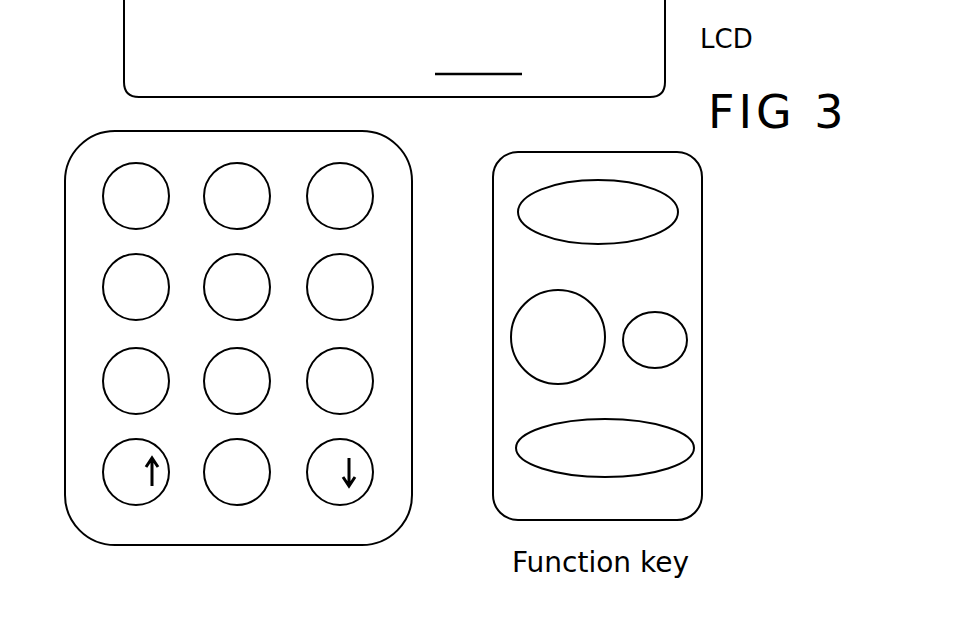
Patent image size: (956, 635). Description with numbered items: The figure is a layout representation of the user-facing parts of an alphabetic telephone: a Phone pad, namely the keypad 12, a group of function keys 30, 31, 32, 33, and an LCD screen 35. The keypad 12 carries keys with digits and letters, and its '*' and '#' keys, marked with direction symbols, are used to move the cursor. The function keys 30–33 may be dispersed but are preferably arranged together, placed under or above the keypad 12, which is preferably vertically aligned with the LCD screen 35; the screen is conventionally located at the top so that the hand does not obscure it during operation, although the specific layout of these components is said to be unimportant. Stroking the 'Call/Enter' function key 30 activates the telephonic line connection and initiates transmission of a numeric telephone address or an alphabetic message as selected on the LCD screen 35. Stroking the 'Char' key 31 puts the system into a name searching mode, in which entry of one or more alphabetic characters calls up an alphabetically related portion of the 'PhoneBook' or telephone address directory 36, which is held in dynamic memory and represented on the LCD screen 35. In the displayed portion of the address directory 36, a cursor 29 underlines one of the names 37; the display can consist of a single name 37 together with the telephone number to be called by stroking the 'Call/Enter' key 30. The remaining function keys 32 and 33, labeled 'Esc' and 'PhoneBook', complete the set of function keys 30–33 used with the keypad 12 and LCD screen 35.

The keypad 12 is at (350, 545).
The cursor 29 is at (496, 76).
The 'Call/Enter' function key 30 is at (678, 212).
The 'Char' key 31 is at (590, 302).
The function key 32 is at (678, 358).
The function key 33 is at (680, 460).
The LCD screen 35 is at (122, 32).
The address directory 36 is at (246, 42).
The name 37 is at (540, 20).